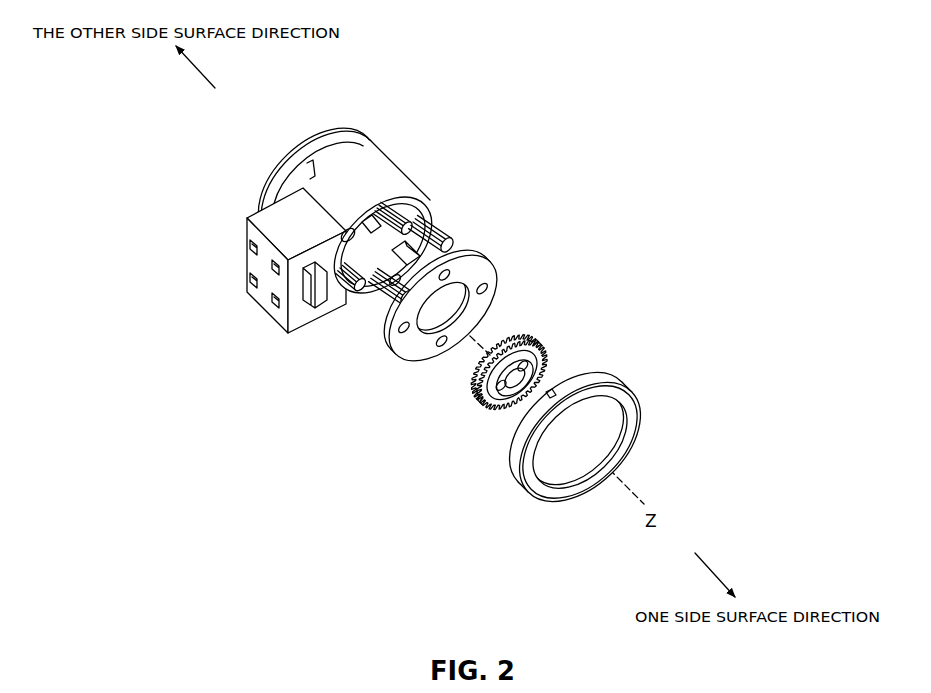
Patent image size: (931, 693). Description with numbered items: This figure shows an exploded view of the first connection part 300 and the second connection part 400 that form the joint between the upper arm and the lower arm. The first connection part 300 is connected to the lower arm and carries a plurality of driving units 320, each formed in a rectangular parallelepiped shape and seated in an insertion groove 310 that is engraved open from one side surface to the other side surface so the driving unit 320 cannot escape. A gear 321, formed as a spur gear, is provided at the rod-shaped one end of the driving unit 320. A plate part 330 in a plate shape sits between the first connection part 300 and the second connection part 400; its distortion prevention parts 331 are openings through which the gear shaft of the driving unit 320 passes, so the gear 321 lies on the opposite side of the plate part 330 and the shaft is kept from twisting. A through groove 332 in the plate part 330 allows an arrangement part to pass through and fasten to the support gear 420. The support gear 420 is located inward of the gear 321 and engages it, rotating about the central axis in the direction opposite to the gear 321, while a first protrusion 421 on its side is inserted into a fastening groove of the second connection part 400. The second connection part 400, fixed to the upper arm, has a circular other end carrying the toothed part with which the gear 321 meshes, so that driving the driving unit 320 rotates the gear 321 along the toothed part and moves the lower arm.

The first connection part 300 is at (278, 316).
The insertion groove 310 is at (419, 193).
The driving unit 320 is at (431, 218).
The gear 321 is at (452, 250).
The plate part 330 is at (448, 315).
The distortion prevention part 331 is at (391, 331).
The through groove 332 is at (497, 279).
The second connection part 400 is at (587, 372).
The support gear 420 is at (513, 370).
The first protrusion 421 is at (512, 409).